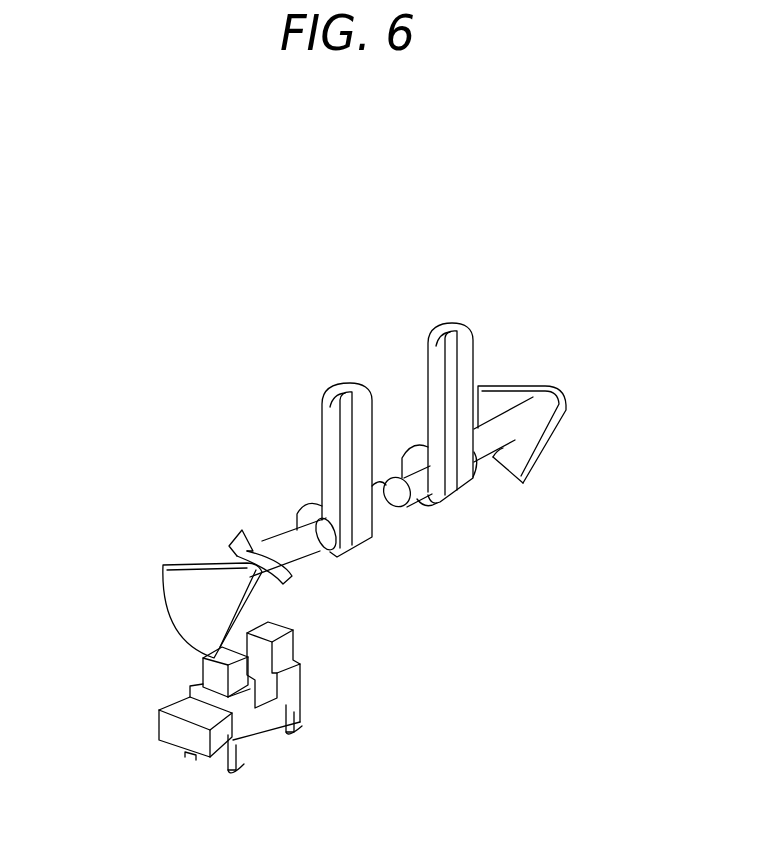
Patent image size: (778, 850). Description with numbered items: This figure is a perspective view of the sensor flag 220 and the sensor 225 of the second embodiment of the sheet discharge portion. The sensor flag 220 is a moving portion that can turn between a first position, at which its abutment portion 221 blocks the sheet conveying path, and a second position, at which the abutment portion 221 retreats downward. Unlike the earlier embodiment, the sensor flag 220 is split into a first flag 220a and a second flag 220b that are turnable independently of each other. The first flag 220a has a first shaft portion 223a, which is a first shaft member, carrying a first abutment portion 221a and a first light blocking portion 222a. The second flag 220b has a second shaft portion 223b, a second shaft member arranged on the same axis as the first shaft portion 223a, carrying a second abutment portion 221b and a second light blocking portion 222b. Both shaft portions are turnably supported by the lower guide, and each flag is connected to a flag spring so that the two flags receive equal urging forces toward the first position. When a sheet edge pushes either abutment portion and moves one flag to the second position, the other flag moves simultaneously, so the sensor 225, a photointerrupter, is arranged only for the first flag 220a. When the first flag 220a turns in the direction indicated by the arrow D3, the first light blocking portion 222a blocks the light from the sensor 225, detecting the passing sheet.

The sensor flag 220 is at (670, 570).
The first flag 220a is at (322, 570).
The second flag 220b is at (493, 497).
The abutment portion 221 is at (483, 200).
The first abutment portion 221a is at (327, 432).
The second abutment portion 221b is at (472, 370).
The first light blocking portion 222a is at (170, 590).
The second light blocking portion 222b is at (507, 400).
The first shaft portion 223a is at (288, 547).
The second shaft portion 223b is at (517, 428).
The sensor 225 is at (263, 728).
The arrow D3 is at (276, 577).